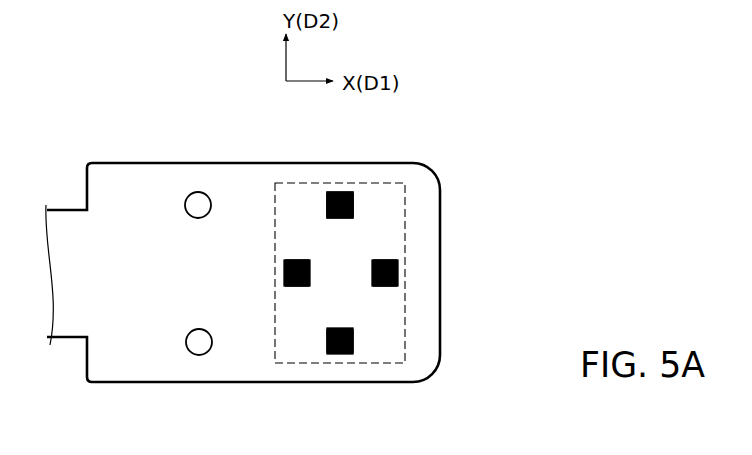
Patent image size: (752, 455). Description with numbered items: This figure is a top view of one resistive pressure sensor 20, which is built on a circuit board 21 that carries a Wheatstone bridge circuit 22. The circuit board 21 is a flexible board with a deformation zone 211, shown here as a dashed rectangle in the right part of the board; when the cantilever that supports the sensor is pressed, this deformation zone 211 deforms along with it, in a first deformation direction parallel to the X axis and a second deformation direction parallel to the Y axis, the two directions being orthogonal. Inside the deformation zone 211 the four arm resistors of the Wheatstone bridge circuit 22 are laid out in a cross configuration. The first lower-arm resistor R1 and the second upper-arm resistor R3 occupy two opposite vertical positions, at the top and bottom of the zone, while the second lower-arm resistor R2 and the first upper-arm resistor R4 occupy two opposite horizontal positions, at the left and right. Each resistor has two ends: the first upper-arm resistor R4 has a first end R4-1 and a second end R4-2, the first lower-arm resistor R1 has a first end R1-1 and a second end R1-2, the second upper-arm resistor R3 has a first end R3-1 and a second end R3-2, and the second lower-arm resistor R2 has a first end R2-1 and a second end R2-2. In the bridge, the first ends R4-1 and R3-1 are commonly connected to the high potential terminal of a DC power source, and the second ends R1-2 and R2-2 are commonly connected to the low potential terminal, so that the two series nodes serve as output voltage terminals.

The resistive pressure sensor 20 is at (421, 142).
The circuit board 21 is at (151, 181).
The deformation zone 211 is at (405, 197).
The Wheatstone bridge circuit 22 is at (340, 191).
The first lower-arm resistor R1 is at (356, 191).
The first end of the first lower-arm resistor R1-1 is at (327, 203).
The second end of the first lower-arm resistor R1-2 is at (355, 205).
The second lower-arm resistor R2 is at (283, 273).
The first end of the second lower-arm resistor R2-1 is at (296, 259).
The second end of the second lower-arm resistor R2-2 is at (287, 289).
The second upper-arm resistor R3 is at (340, 355).
The first end of the second upper-arm resistor R3-1 is at (327, 343).
The second end of the second upper-arm resistor R3-2 is at (353, 343).
The first upper-arm resistor R4 is at (399, 273).
The first end of the first upper-arm resistor R4-1 is at (378, 260).
The second end of the first upper-arm resistor R4-2 is at (383, 287).